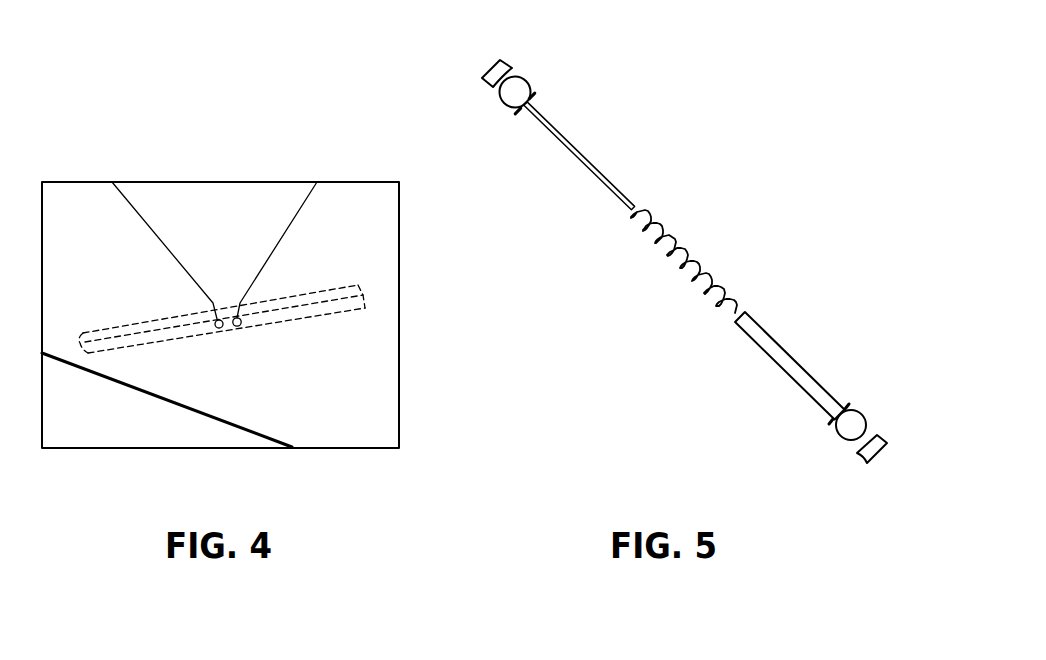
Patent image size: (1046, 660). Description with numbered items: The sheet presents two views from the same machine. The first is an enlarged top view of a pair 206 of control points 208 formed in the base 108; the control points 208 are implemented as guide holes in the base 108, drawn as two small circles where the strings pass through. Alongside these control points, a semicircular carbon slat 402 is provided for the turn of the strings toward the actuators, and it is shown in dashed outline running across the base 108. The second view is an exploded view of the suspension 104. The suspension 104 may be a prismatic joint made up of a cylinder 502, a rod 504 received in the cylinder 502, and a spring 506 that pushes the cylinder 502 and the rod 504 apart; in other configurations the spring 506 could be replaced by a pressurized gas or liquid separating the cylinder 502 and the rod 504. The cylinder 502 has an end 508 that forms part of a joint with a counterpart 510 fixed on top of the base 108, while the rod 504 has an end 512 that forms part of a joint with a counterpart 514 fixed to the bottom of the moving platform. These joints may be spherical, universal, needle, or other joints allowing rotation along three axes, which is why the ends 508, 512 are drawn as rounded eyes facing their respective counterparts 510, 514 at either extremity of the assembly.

In FIG. 5, the suspension 104 is at (756, 122).
In FIG. 4, the base 108 is at (128, 283).
In FIG. 4, the pair of control points 206 is at (290, 388).
In FIG. 4, the control points 208 is at (222, 328).
In FIG. 4, the semicircular carbon slat 402 is at (312, 298).
In FIG. 5, the cylinder 502 is at (782, 343).
In FIG. 5, the rod 504 is at (593, 165).
In FIG. 5, the spring 506 is at (693, 255).
In FIG. 5, the end of cylinder 508 is at (837, 432).
In FIG. 5, the counterpart 510 is at (880, 435).
In FIG. 5, the end of rod 512 is at (520, 83).
In FIG. 5, the counterpart 514 is at (484, 84).